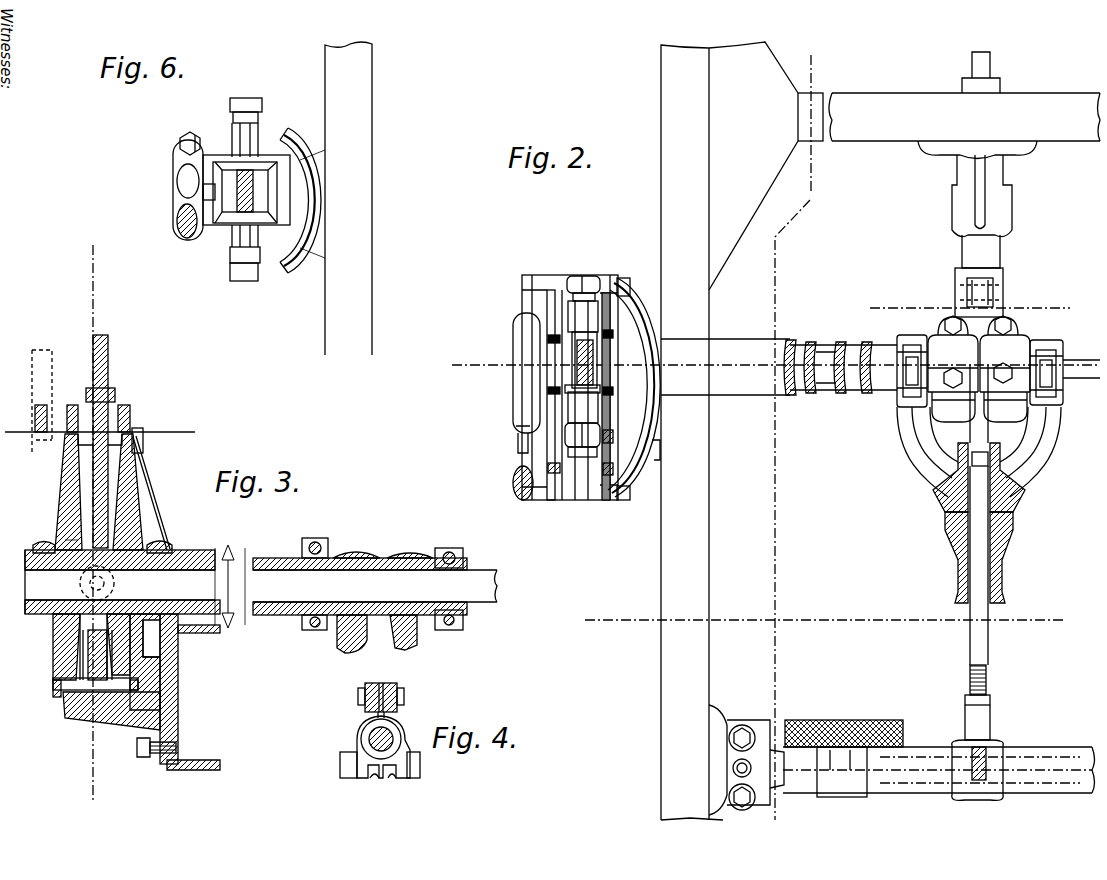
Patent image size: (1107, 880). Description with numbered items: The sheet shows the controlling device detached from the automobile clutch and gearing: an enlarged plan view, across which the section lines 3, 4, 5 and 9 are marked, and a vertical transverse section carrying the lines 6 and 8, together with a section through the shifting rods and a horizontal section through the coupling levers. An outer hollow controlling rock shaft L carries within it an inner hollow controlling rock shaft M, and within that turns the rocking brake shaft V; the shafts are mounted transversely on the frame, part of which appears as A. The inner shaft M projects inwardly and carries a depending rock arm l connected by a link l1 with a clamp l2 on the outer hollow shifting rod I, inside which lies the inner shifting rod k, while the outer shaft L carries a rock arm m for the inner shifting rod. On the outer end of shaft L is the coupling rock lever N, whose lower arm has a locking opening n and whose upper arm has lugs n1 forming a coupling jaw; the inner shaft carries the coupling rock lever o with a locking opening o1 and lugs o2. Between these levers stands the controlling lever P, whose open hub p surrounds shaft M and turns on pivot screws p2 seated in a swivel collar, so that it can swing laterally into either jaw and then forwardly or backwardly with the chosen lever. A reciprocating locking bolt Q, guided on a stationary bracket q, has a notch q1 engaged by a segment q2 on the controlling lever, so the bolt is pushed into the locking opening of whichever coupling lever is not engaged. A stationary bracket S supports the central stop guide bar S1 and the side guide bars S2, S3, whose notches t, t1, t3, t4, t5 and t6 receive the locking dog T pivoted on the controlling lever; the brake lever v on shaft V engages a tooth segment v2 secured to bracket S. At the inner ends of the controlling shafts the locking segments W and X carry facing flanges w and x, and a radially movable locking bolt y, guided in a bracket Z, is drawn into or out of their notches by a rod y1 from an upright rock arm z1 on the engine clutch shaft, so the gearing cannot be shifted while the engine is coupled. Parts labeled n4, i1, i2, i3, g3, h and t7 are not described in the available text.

In FIG. 6, the frame / supporting column A is at (372, 62).
In FIG. 3, the frame / supporting column A is at (215, 771).
In FIG. 2, the frame / supporting column A is at (780, 113).
In FIG. 6, the controlling lever P is at (253, 190).
In FIG. 3, the controlling lever P is at (93, 345).
In FIG. 2, the controlling lever P is at (597, 350).
In FIG. 6, the coupling rock lever N is at (270, 210).
In FIG. 3, the coupling rock lever N is at (155, 530).
In FIG. 6, the lugs n1 is at (222, 165).
In FIG. 3, the lugs n1 is at (143, 440).
In FIG. 3, the flange of arm n4 is at (33, 548).
In FIG. 3, the locking opening n is at (138, 685).
In FIG. 6, the coupling rock lever o is at (176, 193).
In FIG. 3, the coupling rock lever o is at (62, 625).
In FIG. 3, the locking opening o1 is at (53, 692).
In FIG. 6, the lugs o2 is at (180, 142).
In FIG. 3, the lugs o2 is at (70, 475).
In FIG. 6, the brake lever v is at (178, 226).
In FIG. 3, the brake lever v is at (35, 350).
In FIG. 2, the brake lever v is at (518, 498).
In FIG. 3, the tooth segment v2 is at (38, 405).
In FIG. 3, the open hub p is at (60, 520).
In FIG. 6, the pivot screws p2 is at (248, 98).
In FIG. 3, the section line 8— 8 is at (91, 514).
In FIG. 3, the section line 6— 6 is at (99, 423).
In FIG. 2, the section line 3— 3 is at (775, 355).
In FIG. 2, the section line 4— 4 is at (970, 298).
In FIG. 2, the section line 5— 5 is at (825, 611).
In FIG. 2, the section line 9— 9 is at (793, 428).
In FIG. 3, the locking dog T is at (108, 388).
In FIG. 2, the locking dog T is at (580, 393).
In FIG. 3, the stationary bracket S is at (140, 505).
In FIG. 2, the stationary bracket S is at (575, 500).
In FIG. 2, the central stop guide bar S1 is at (585, 276).
In FIG. 3, the inner guide bar S2 is at (125, 405).
In FIG. 2, the inner guide bar S2 is at (606, 293).
In FIG. 3, the outer guide bar S3 is at (72, 405).
In FIG. 2, the outer guide bar S3 is at (551, 290).
In FIG. 3, the outer hollow controlling rock shaft L is at (246, 581).
In FIG. 2, the outer hollow controlling rock shaft L is at (842, 338).
In FIG. 3, the rocking brake shaft V is at (490, 588).
In FIG. 2, the rocking brake shaft V is at (790, 353).
In FIG. 3, the inner hollow controlling rock shaft M is at (215, 612).
In FIG. 2, the inner hollow controlling rock shaft M is at (830, 393).
In FIG. 3, the rock arm m is at (340, 650).
In FIG. 2, the rock arm m is at (940, 340).
In FIG. 3, the rock arm l is at (417, 640).
In FIG. 2, the rock arm l is at (1010, 340).
In FIG. 4, the link l1 is at (397, 690).
In FIG. 4, the clamp l2 is at (390, 778).
In FIG. 3, the locking bolt Q is at (125, 692).
In FIG. 3, the stationary bracket q is at (150, 757).
In FIG. 3, the notch q1 is at (94, 690).
In FIG. 3, the segment q2 is at (60, 682).
In FIG. 4, the outer hollow shifting rod I is at (361, 740).
In FIG. 2, the outer hollow shifting rod I is at (995, 87).
In FIG. 4, the inner shifting rod k is at (393, 736).
In FIG. 2, the inner shifting rod k is at (972, 62).
In FIG. 2, the hanger i3 is at (1003, 170).
In FIG. 2, the hanger pin i2 is at (980, 290).
In FIG. 2, the hanger clevis (i') i1 is at (990, 305).
In FIG. 2, the locking segment X is at (905, 430).
In FIG. 2, the locking segment W is at (1055, 425).
In FIG. 2, the segmental flange x is at (945, 472).
In FIG. 2, the segmental flange w is at (1020, 480).
In FIG. 2, the bracket Z is at (948, 540).
In FIG. 2, the locking bolt y is at (988, 570).
In FIG. 2, the rod y1 is at (986, 678).
In FIG. 2, the rock arm z1 is at (980, 790).
In FIG. 2, the cross-hatched block g3 is at (858, 720).
In FIG. 2, the slide block h is at (800, 795).
In FIG. 2, the notch t is at (548, 338).
In FIG. 2, the notch t1 is at (520, 440).
In FIG. 2, the notch t3 is at (613, 436).
In FIG. 2, the notch t4 is at (613, 468).
In FIG. 2, the notch t5 is at (548, 390).
In FIG. 2, the notch t6 is at (613, 390).
In FIG. 2, the cap t7 is at (630, 288).